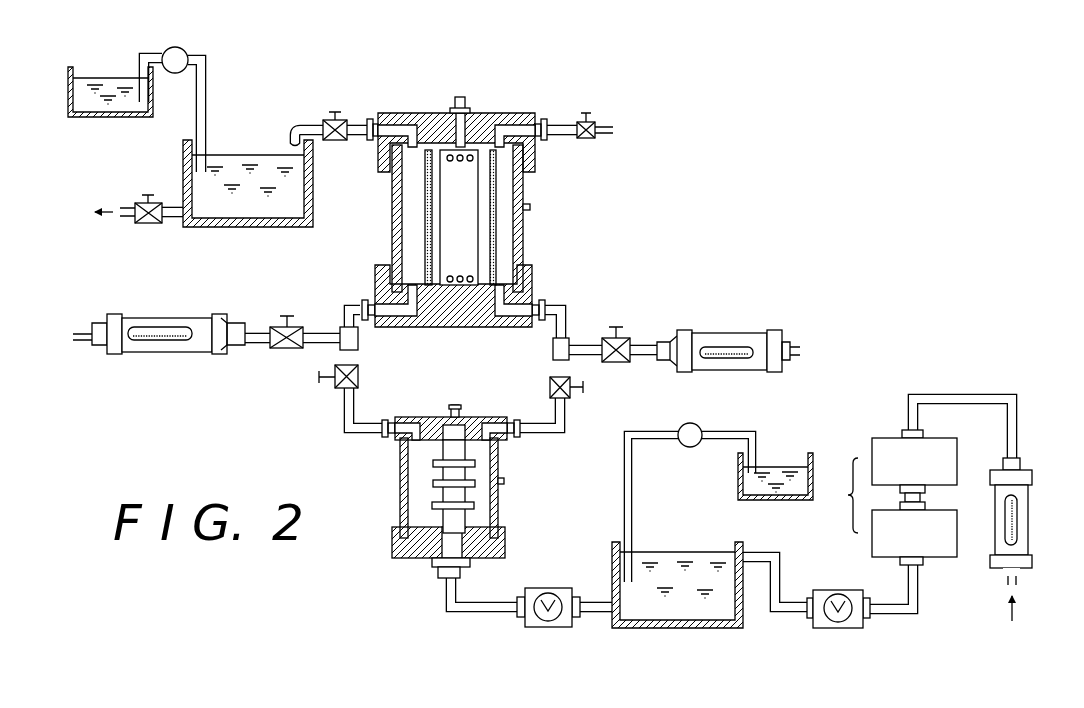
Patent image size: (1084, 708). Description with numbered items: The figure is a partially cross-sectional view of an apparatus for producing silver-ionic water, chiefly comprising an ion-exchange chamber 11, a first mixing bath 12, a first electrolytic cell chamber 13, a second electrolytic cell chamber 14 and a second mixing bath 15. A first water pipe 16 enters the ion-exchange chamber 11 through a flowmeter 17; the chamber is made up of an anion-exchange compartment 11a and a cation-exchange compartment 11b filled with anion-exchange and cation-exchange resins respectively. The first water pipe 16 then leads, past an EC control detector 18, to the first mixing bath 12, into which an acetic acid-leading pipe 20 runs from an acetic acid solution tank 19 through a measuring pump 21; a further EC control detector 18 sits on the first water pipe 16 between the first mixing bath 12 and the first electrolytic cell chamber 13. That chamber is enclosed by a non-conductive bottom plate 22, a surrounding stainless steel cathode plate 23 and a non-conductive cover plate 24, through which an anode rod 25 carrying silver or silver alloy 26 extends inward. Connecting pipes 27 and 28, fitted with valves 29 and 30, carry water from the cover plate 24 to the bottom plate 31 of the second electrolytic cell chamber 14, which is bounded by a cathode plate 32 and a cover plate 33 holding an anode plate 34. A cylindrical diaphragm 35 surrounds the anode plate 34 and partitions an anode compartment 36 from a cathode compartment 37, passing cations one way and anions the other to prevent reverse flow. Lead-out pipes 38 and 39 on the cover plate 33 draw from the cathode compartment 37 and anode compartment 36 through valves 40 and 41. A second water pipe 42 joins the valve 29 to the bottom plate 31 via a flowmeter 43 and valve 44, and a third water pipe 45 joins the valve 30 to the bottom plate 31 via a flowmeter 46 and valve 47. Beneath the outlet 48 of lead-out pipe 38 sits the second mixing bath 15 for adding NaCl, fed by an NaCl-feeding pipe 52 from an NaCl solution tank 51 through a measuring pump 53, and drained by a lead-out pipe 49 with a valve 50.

The ion-exchange chamber 11 is at (904, 505).
The anion-exchange compartment 11a is at (945, 445).
The cation-exchange compartment 11b is at (945, 552).
The first mixing bath 12 is at (688, 628).
The first electrolytic cell chamber 13 is at (437, 486).
The second electrolytic cell chamber 14 is at (447, 218).
The second mixing bath 15 is at (246, 227).
The first water pipe 16 is at (485, 612).
The flowmeter 17 is at (1032, 500).
The EC control detector 18 is at (550, 627).
The acetic acid solution tank 19 is at (783, 500).
The acetic acid-leading pipe 20 is at (634, 505).
The measuring pump 21 is at (694, 447).
The bottom plate 22 is at (410, 558).
The cathode plate 23 is at (504, 478).
The cover plate 24 is at (426, 417).
The anode rod 25 is at (470, 497).
The silver or silver alloy 26 is at (470, 508).
The connecting pipe 27 is at (348, 313).
The connecting pipe 28 is at (565, 315).
The valve 29 is at (358, 385).
The valve 30 is at (570, 393).
The bottom plate 31 is at (432, 327).
The cathode plate 32 is at (530, 195).
The cover plate 33 is at (428, 112).
The anode plate 34 is at (478, 237).
The cylindrical diaphragm 35 is at (497, 257).
The anode compartment 36 is at (424, 238).
The cathode compartment 37 is at (397, 190).
The lead-out pipe 38 is at (364, 118).
The lead-out pipe 39 is at (562, 124).
The valve 40 is at (330, 118).
The valve 41 is at (600, 125).
The second water pipe 42 is at (258, 333).
The flowmeter 43 is at (172, 318).
The valve 44 is at (285, 348).
The third water pipe 45 is at (585, 348).
The flowmeter 46 is at (725, 333).
The valve 47 is at (617, 362).
The outlet 48 is at (290, 137).
The lead-out pipe 49 is at (178, 218).
The valve 50 is at (150, 224).
The NaCl solution tank 51 is at (131, 117).
The NaCl-feeding pipe 52 is at (207, 90).
The measuring pump 53 is at (175, 73).